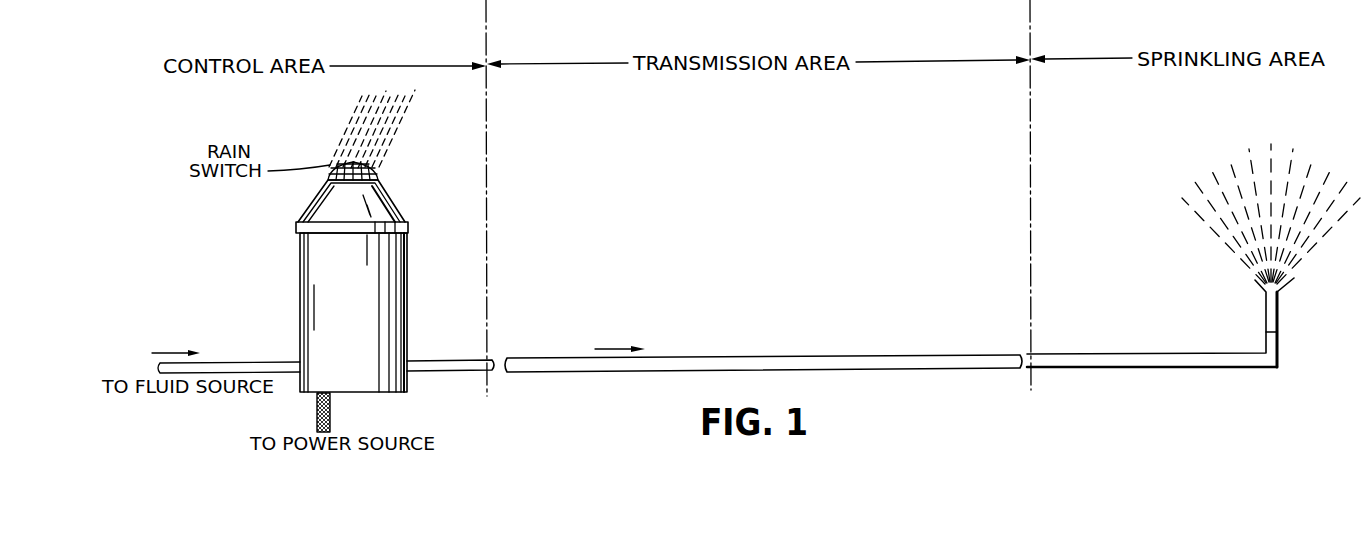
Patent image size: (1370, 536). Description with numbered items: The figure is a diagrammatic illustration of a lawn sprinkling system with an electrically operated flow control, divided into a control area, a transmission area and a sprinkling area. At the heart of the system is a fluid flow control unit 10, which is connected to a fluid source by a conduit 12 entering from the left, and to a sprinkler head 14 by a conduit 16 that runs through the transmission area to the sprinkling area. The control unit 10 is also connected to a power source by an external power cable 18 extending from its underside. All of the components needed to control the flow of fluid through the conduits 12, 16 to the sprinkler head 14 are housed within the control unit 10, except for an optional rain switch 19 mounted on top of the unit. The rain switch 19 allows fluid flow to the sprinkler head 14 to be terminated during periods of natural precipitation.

The fluid flow control unit 10 is at (325, 241).
The conduit 12 is at (243, 361).
The sprinkler head 14 is at (1264, 303).
The conduit 16 is at (742, 357).
The external power cable 18 is at (317, 414).
The rain switch 19 is at (378, 165).